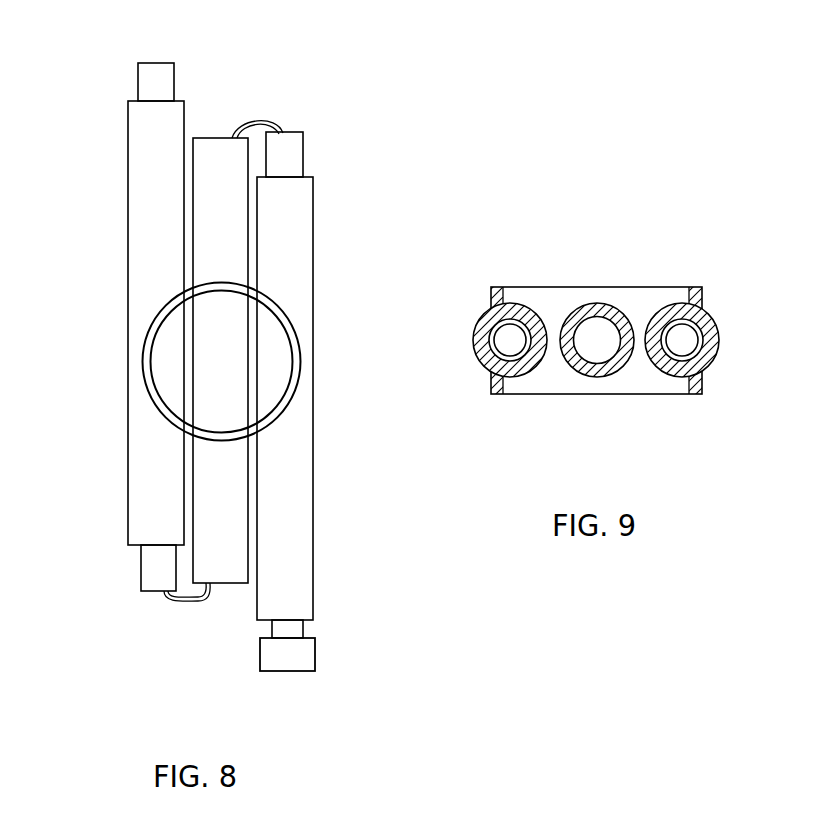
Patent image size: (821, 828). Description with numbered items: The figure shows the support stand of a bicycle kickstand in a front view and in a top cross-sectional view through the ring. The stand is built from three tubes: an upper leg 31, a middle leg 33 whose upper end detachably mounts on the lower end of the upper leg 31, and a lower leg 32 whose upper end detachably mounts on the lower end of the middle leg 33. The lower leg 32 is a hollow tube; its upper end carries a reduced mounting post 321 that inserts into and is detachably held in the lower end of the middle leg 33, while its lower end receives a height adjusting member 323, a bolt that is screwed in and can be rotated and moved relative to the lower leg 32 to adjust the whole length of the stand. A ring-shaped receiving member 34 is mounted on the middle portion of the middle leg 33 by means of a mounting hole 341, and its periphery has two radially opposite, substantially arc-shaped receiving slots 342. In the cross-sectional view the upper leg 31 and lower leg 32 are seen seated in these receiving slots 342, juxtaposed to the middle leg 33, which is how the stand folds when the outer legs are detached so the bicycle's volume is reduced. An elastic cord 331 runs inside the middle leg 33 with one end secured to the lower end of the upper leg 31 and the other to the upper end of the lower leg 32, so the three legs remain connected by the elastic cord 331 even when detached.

In FIG. 8, the upper leg 31 is at (155, 268).
In FIG. 9, the upper leg 31 is at (473, 328).
In FIG. 8, the lower leg 32 is at (285, 214).
In FIG. 9, the lower leg 32 is at (703, 318).
In FIG. 8, the middle leg 33 is at (215, 203).
In FIG. 9, the middle leg 33 is at (593, 305).
In FIG. 8, the receiving member 34 is at (288, 386).
In FIG. 9, the receiving member 34 is at (585, 350).
In FIG. 8, the reduced mounting post 321 is at (165, 83).
In FIG. 8, the height adjusting member 323 is at (295, 657).
In FIG. 8, the elastic cord 331 is at (177, 600).
In FIG. 9, the mounting hole 341 is at (590, 375).
In FIG. 9, the receiving slots 342 is at (507, 303).